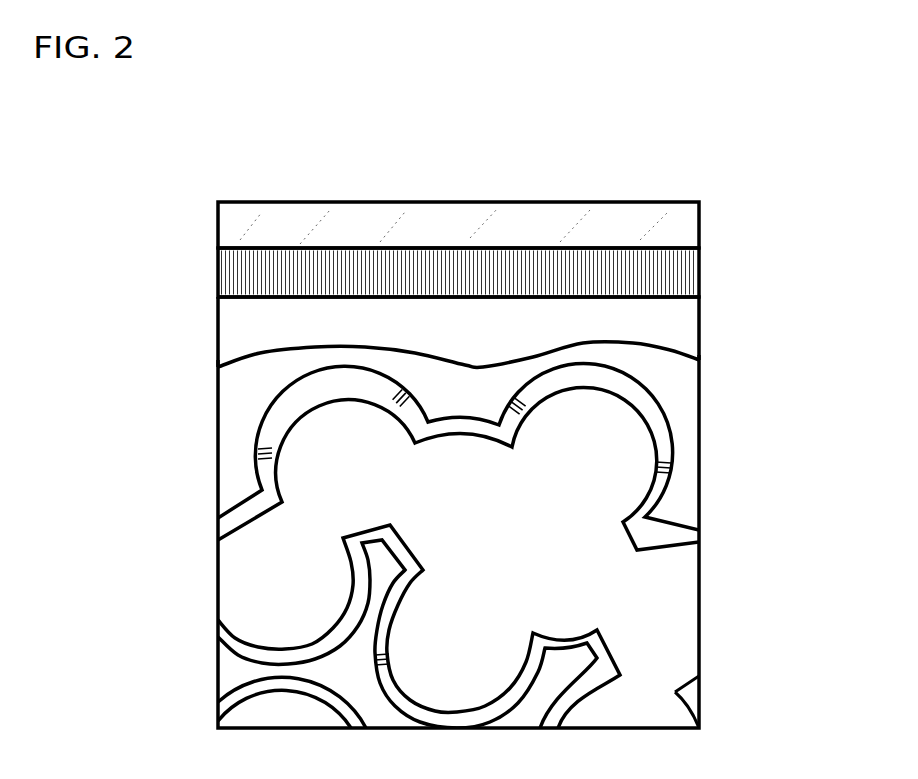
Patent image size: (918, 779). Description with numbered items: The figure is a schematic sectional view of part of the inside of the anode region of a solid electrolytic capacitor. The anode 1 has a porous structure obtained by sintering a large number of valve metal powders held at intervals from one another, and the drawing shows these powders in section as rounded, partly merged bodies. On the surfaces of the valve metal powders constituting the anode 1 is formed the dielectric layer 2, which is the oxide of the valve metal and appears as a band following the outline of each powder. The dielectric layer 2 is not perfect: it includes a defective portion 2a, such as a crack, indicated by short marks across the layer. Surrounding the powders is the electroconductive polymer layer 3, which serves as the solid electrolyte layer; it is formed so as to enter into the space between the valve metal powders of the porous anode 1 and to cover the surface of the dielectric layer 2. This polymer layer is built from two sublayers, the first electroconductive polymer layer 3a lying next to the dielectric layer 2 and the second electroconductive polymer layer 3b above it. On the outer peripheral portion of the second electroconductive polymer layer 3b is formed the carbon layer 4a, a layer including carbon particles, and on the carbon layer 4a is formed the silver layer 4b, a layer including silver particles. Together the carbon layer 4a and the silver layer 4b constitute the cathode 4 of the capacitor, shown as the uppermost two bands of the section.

The anode 1 is at (585, 488).
The dielectric layer 2 is at (638, 400).
The defective portion 2a is at (670, 472).
The electroconductive polymer layer 3 is at (114, 320).
The first electroconductive polymer layer 3a is at (230, 393).
The second electroconductive polymer layer 3b is at (230, 343).
The cathode 4 is at (114, 202).
The carbon layer 4a is at (230, 278).
The silver layer 4b is at (230, 223).